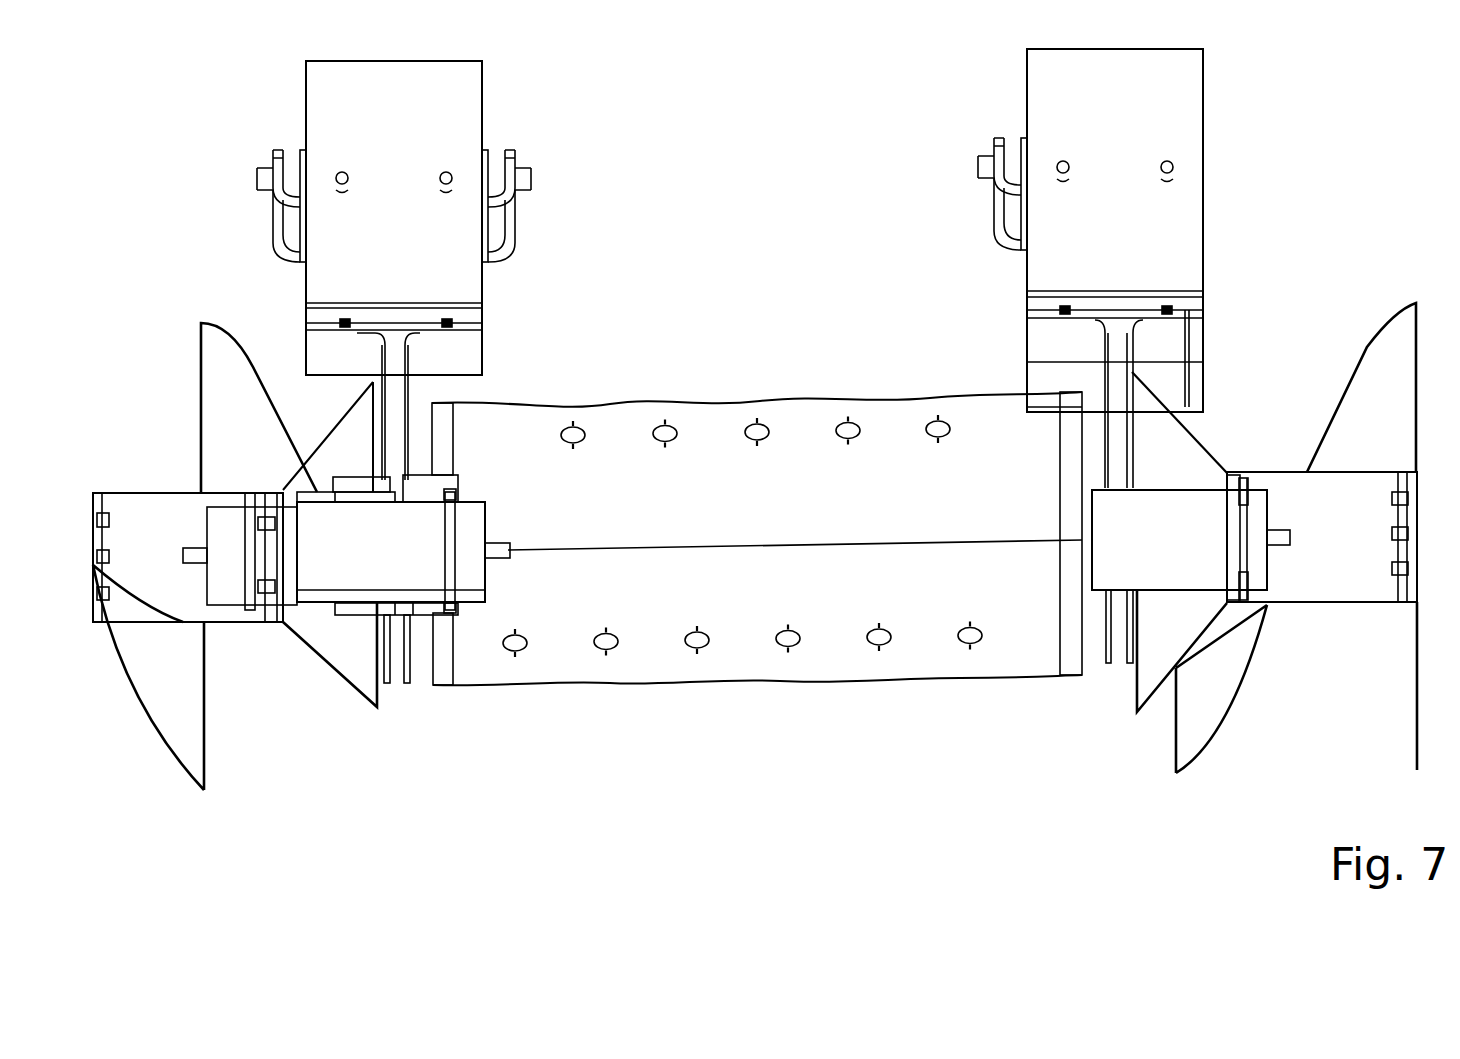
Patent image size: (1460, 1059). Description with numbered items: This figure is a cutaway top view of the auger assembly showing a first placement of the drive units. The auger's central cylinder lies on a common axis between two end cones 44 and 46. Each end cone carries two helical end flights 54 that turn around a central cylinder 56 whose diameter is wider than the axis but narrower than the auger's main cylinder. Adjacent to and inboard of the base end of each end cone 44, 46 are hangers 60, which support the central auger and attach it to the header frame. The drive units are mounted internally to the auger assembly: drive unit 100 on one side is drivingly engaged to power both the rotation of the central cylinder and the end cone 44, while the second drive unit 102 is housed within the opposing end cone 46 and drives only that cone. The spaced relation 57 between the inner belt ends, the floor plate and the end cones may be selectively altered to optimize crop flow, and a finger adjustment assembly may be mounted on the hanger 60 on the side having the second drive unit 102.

The end cone 44 is at (257, 707).
The end cone 46 is at (1326, 690).
The helical end flight 54 is at (254, 455).
The central cylinder 56 is at (135, 563).
The spaced relation 57 is at (1157, 633).
The hanger 60 is at (410, 402).
The drive unit 100 is at (362, 560).
The second drive unit 102 is at (1157, 548).